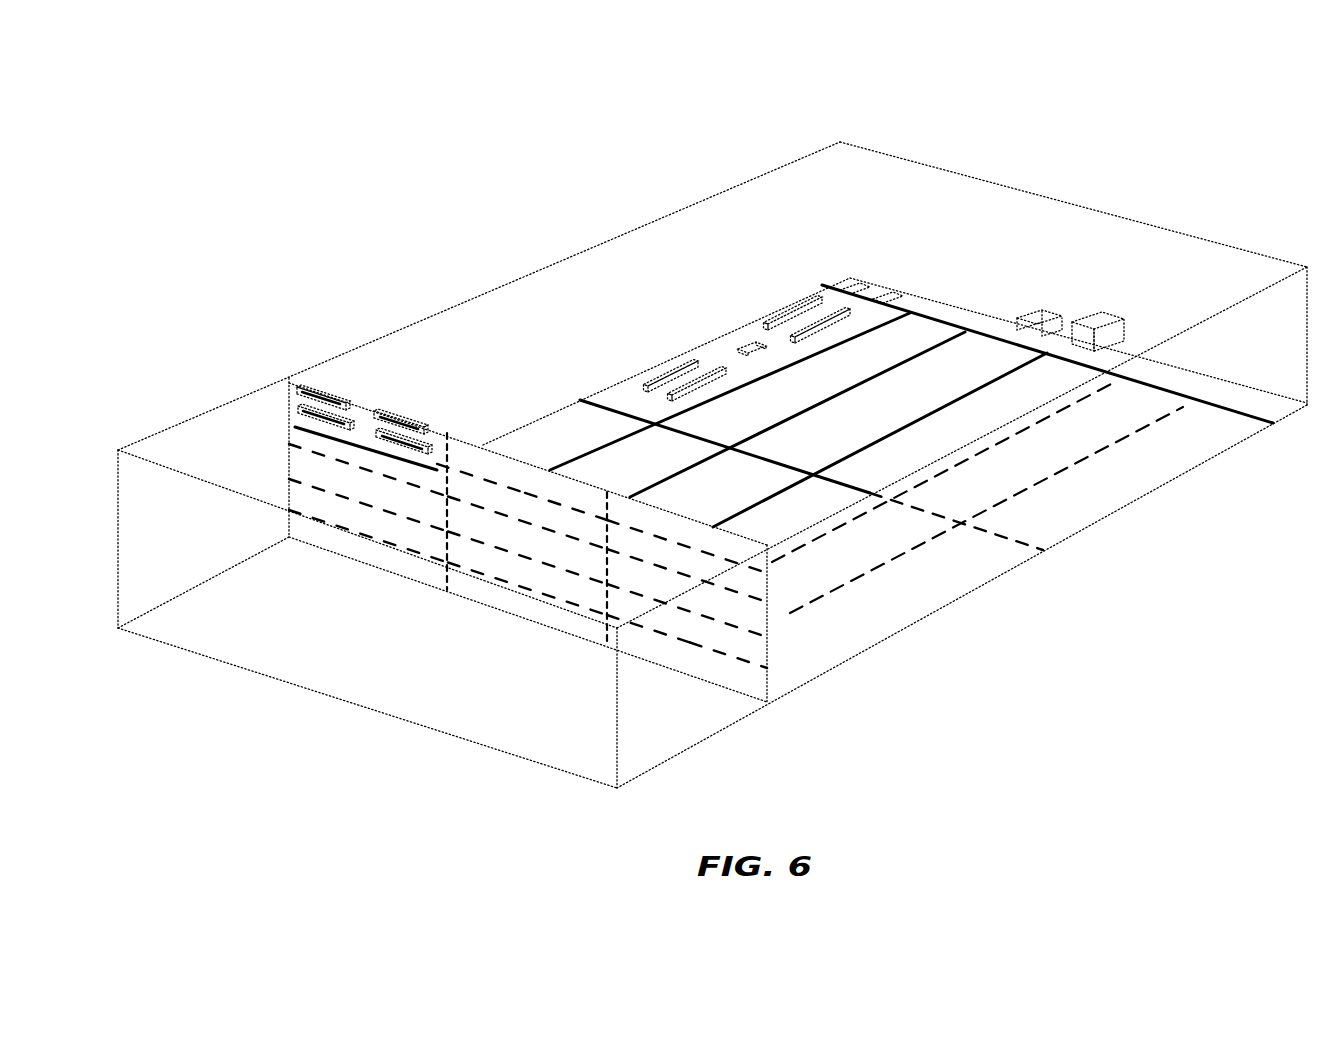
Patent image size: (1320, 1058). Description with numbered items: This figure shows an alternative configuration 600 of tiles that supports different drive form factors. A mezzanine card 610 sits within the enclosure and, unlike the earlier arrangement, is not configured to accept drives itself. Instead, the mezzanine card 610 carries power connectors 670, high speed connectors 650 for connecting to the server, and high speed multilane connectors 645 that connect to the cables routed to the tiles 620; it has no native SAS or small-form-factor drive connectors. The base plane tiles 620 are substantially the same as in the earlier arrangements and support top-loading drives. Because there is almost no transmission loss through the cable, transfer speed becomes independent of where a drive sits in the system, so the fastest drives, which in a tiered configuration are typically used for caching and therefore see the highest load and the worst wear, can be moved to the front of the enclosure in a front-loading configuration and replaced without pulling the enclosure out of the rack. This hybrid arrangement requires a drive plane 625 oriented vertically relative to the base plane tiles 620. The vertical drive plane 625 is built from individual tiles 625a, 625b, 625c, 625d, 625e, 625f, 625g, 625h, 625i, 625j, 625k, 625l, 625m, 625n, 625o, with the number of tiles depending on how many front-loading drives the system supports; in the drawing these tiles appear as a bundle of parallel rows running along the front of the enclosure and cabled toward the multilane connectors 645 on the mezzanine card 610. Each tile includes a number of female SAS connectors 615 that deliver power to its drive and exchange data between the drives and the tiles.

The system 600 is at (570, 413).
The mezzanine card 610 is at (1253, 398).
The female SAS connectors 615 is at (655, 375).
The tiles 620 is at (1093, 493).
The drive plane 625 is at (686, 672).
The tile 625a is at (367, 417).
The tile 625b is at (433, 477).
The tile 625c is at (315, 472).
The tile 625d is at (353, 513).
The tile 625e is at (305, 522).
The tile 625f is at (480, 458).
The tile 625g is at (505, 508).
The tile 625h is at (543, 538).
The tile 625i is at (560, 585).
The tile 625j is at (576, 620).
The tile 625k is at (773, 562).
The tile 625l is at (752, 587).
The tile 625m is at (752, 620).
The tile 625n is at (753, 652).
The tile 625o is at (737, 673).
The high speed multilane connectors 645 is at (847, 278).
The high speed connectors 650 is at (1093, 320).
The power connectors 670 is at (1030, 322).